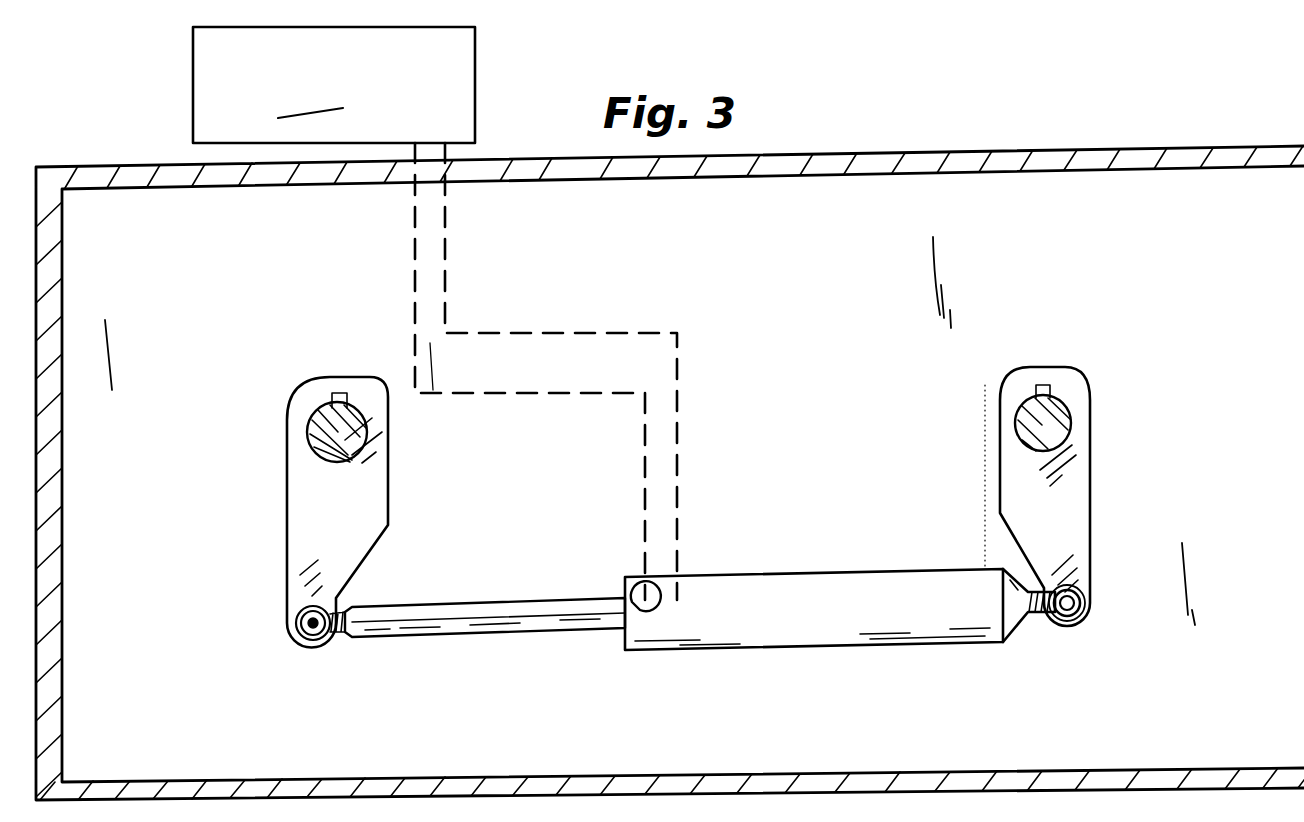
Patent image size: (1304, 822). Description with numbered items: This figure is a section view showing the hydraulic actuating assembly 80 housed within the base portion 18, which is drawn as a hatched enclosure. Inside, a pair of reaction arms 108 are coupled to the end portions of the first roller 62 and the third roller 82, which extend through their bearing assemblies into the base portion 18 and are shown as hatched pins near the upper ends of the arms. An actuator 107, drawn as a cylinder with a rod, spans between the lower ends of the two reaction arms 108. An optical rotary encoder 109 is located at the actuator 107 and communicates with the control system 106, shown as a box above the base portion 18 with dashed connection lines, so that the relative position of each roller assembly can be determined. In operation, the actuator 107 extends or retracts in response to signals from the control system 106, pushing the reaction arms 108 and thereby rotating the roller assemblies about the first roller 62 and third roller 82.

The base portion 18 is at (1052, 158).
The control system 106 is at (435, 313).
The hydraulic actuating assembly 80 is at (790, 296).
The reaction arms 108 is at (298, 507).
The third roller 82 is at (333, 415).
The first roller 62 is at (1060, 405).
The actuator 107 is at (815, 585).
The optical rotary encoder 109 is at (642, 588).